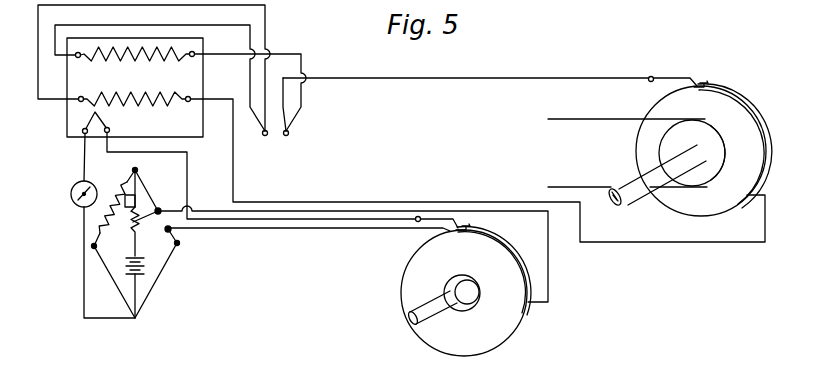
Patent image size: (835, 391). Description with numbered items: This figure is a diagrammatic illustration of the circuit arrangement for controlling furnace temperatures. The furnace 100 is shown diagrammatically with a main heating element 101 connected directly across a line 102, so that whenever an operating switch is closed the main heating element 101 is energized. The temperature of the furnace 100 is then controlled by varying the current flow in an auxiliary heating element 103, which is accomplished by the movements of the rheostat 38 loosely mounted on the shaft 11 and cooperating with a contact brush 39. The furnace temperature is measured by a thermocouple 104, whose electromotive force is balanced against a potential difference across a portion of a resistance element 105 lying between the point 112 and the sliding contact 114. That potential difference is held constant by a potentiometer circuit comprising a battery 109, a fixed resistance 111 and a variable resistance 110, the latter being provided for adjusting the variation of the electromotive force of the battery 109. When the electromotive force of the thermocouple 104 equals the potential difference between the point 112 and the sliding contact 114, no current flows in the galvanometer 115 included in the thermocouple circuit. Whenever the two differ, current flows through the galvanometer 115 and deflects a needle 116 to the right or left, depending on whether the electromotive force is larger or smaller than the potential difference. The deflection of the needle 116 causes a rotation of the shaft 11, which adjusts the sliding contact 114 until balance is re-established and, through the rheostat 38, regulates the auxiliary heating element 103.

The shaft 11 is at (633, 200).
The rheostat 38 is at (720, 88).
The contact brush 39 is at (665, 77).
The furnace 100 is at (64, 117).
The main heating element 101 is at (150, 65).
The line 102 is at (276, 135).
The auxiliary heating element 103 is at (112, 97).
The thermocouple 104 is at (112, 118).
The resistance element 105 is at (503, 240).
The battery 109 is at (143, 265).
The variable resistance 110 is at (160, 196).
The fixed resistance 111 is at (117, 190).
The point 112 is at (530, 310).
The sliding contact 114 is at (435, 219).
The galvanometer 115 is at (71, 193).
The needle 116 is at (85, 182).